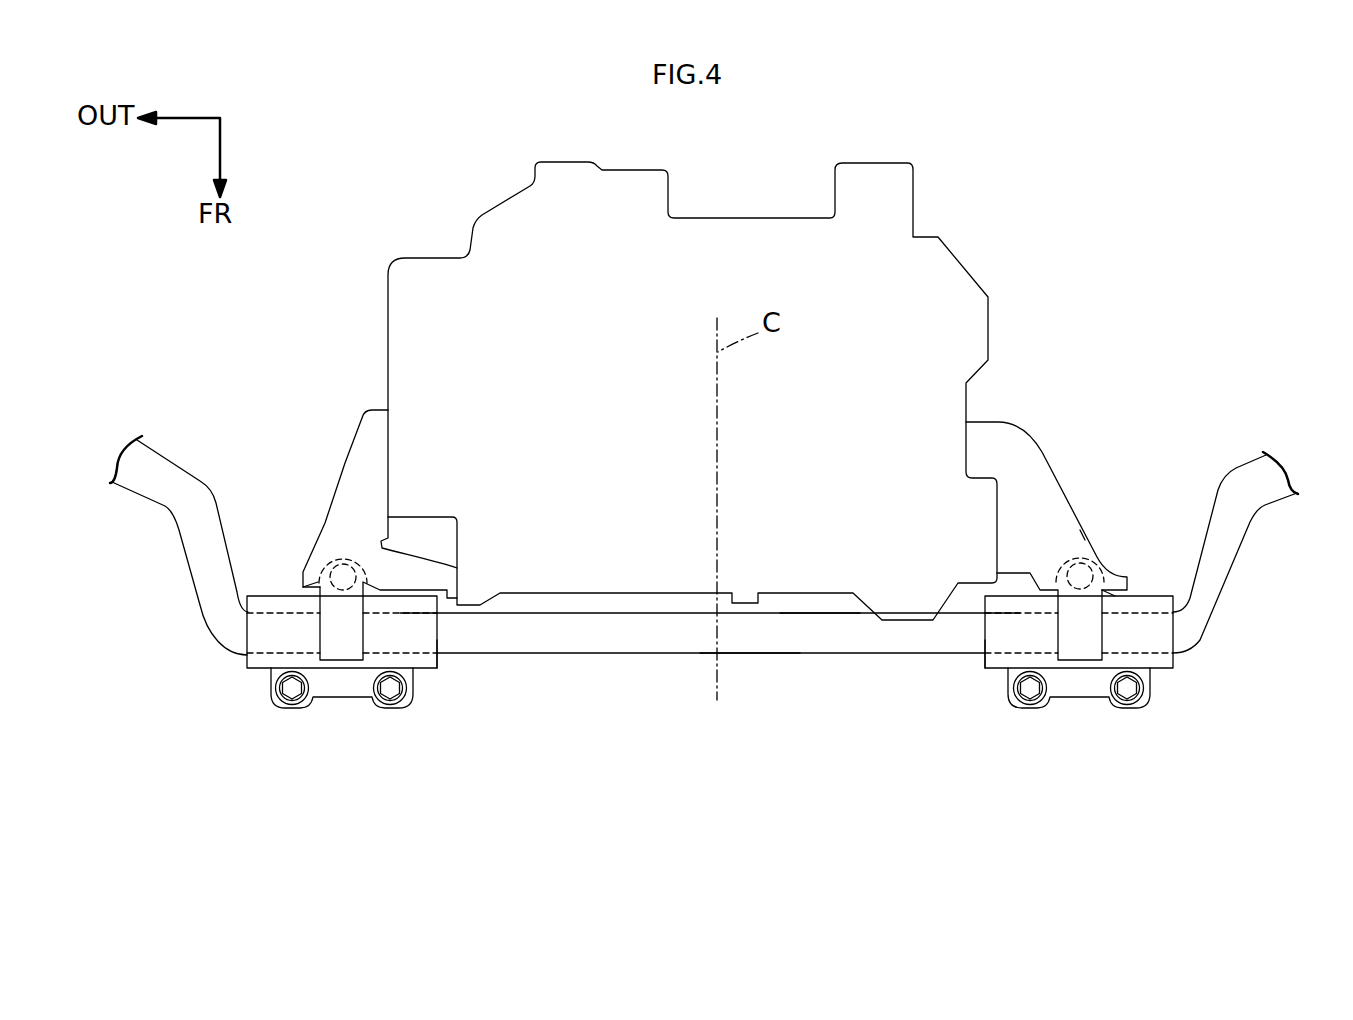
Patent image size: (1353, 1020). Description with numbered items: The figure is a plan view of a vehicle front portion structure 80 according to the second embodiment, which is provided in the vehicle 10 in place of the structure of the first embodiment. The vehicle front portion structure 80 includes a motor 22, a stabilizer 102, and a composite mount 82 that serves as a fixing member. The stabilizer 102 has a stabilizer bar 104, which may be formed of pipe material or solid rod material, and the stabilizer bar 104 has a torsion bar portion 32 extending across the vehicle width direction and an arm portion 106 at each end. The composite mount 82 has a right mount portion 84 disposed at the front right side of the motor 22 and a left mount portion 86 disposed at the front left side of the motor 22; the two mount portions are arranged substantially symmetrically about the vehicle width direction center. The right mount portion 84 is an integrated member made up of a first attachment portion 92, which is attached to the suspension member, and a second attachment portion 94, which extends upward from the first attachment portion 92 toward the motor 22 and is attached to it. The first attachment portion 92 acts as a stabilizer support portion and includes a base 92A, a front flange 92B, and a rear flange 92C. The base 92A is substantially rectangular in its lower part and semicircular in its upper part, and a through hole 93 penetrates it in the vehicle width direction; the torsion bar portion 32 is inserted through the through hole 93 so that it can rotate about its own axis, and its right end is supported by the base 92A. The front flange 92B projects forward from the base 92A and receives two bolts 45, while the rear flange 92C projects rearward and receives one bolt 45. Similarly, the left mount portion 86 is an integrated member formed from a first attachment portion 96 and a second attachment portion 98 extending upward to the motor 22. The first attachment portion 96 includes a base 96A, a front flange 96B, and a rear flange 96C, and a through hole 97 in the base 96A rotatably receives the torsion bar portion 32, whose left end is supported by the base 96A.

The vehicle 10 is at (1171, 165).
The motor 22 is at (958, 245).
The torsion bar portion 32 is at (636, 640).
The bolt 45 is at (340, 575).
The vehicle front portion structure 80 is at (1068, 215).
The composite mount 82 is at (1093, 455).
The right mount portion 84 is at (315, 513).
The left mount portion 86 is at (1088, 517).
The first attachment portion 92 is at (242, 668).
The base 92A is at (425, 665).
The front flange 92B is at (343, 685).
The rear flange 92C is at (305, 590).
The through hole 93 is at (430, 640).
The second attachment portion 94 is at (340, 462).
The first attachment portion 96 is at (1178, 667).
The base 96A is at (997, 665).
The front flange 96B is at (1080, 688).
The rear flange 96C is at (1120, 592).
The through hole 97 is at (990, 640).
The second attachment portion 98 is at (1045, 450).
The stabilizer 102 is at (752, 657).
The stabilizer bar 104 is at (816, 655).
The arm portion 106 is at (192, 556).